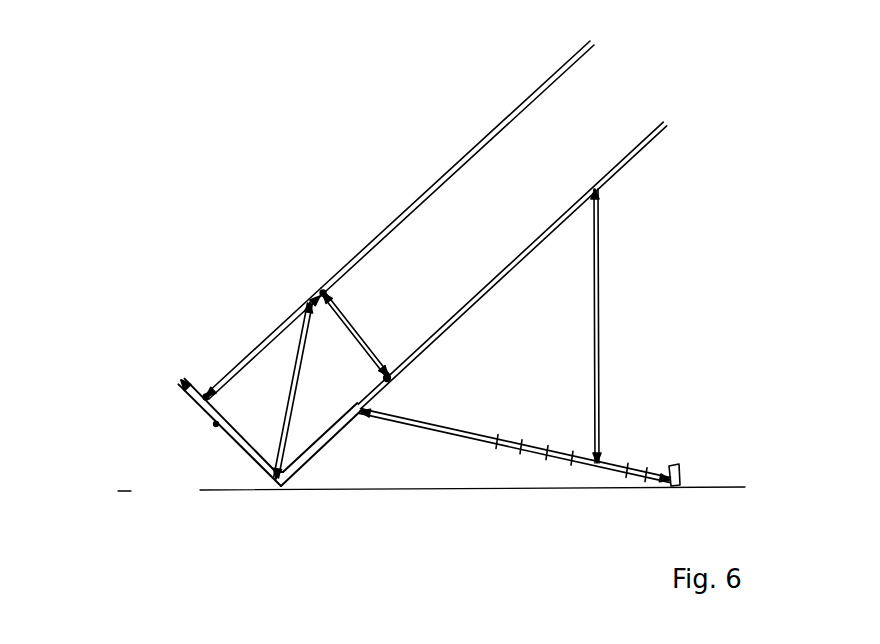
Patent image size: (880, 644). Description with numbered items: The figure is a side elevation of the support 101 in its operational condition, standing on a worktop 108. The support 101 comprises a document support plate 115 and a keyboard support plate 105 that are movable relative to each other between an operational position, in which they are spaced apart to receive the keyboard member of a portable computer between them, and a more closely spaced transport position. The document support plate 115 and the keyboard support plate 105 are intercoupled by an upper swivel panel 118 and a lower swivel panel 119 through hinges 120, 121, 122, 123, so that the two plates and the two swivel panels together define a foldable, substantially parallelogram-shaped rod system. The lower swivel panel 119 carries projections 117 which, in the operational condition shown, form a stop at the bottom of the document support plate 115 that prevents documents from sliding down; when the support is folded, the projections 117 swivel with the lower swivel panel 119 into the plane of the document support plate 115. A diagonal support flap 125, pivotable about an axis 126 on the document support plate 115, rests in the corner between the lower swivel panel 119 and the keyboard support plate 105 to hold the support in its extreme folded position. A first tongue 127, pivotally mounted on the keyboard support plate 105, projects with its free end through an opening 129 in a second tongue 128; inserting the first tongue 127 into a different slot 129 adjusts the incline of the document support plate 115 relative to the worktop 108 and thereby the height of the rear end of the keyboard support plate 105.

The support 101 is at (377, 186).
The keyboard support plate 105 is at (642, 150).
The worktop 108 is at (560, 487).
The document support plate 115 is at (540, 88).
The projections 117 is at (178, 385).
The swivel panel 118 is at (357, 330).
The lower swivel panel 119 is at (216, 424).
The hinge 120 is at (388, 374).
The hinge 121 is at (322, 290).
The hinge 122 is at (265, 467).
The hinge 123 is at (206, 397).
The diagonal support flap 125 is at (294, 368).
The axis 126 is at (310, 300).
The first tongue 127 is at (597, 315).
The second tongue 128 is at (664, 476).
The opening 129 is at (628, 462).